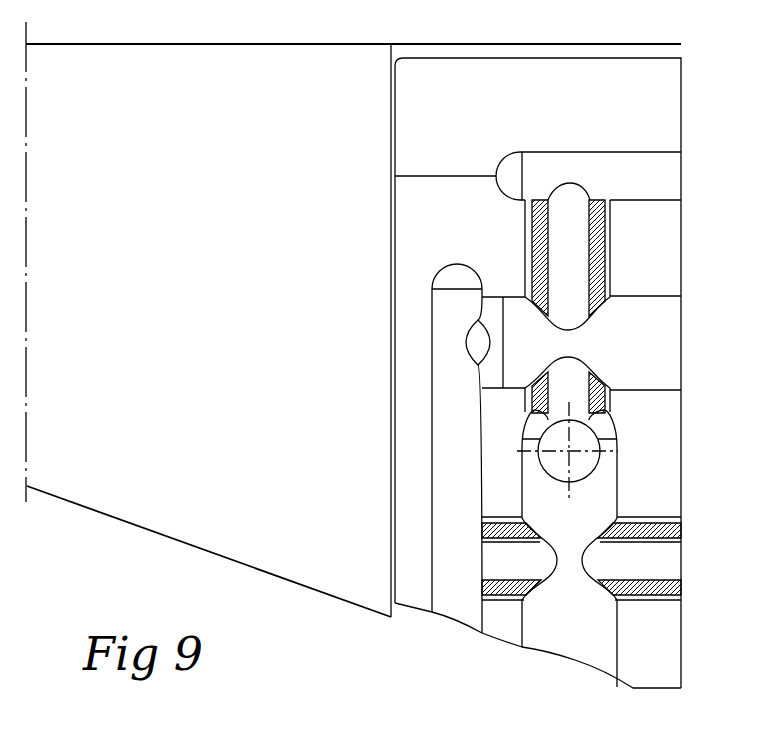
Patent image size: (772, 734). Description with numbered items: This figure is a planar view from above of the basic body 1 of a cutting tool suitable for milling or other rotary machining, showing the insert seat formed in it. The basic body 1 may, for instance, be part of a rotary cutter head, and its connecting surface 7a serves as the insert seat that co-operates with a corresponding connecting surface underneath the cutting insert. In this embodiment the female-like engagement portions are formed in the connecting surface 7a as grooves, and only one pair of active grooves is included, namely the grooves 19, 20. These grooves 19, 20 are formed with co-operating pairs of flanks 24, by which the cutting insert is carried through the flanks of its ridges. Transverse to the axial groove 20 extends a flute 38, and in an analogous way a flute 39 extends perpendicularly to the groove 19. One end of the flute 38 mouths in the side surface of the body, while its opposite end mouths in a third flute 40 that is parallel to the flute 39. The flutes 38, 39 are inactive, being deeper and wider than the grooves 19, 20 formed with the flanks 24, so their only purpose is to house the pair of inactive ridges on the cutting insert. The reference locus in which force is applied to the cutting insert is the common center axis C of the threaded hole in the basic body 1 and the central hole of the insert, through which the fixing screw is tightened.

The basic body 1 is at (340, 615).
The connecting surface 7a is at (436, 231).
The groove 19 is at (667, 561).
The groove 20 is at (567, 200).
The flanks 24 is at (598, 238).
The flute 38 is at (665, 347).
The flute 39 is at (565, 637).
The third flute 40 is at (450, 408).
The center axis C is at (572, 458).